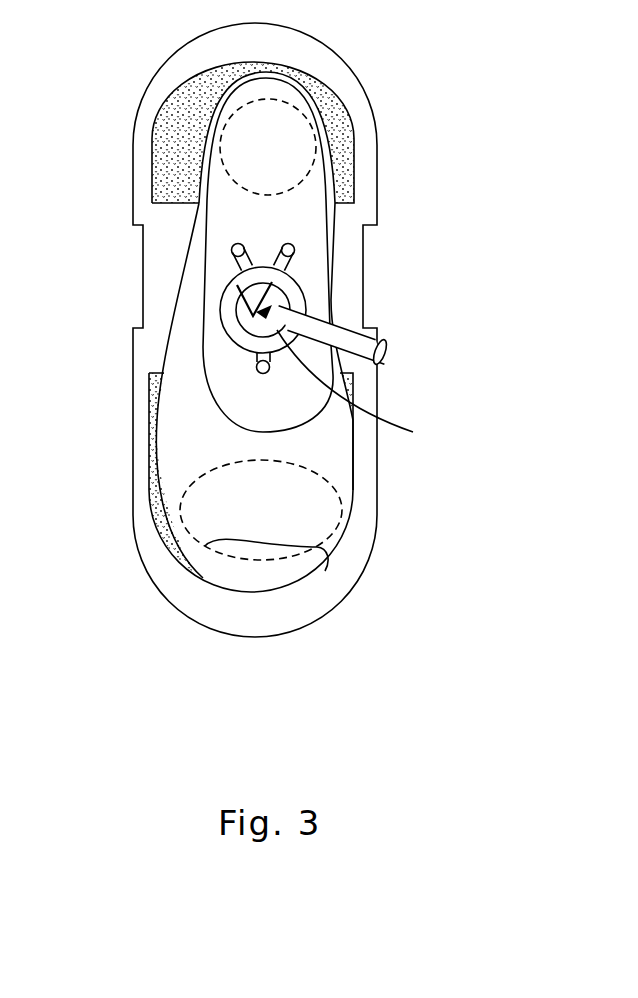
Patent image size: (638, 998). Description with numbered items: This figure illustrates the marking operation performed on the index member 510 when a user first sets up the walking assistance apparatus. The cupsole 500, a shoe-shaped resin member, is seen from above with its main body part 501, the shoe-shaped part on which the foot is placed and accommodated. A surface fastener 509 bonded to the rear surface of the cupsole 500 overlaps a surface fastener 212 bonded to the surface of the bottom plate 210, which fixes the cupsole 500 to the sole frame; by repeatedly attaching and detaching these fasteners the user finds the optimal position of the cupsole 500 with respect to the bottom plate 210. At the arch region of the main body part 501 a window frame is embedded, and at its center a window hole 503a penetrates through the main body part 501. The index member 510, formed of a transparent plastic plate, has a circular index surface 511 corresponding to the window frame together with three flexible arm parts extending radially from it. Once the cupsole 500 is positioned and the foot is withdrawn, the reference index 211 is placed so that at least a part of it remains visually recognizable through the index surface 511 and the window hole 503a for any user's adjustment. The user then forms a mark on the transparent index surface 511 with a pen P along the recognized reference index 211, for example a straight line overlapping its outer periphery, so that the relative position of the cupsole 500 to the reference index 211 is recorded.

The bottom plate 210 is at (162, 65).
The surface fastener 212 is at (340, 123).
The cupsole 500 is at (190, 247).
The main body part 501 is at (303, 237).
The surface fastener 509 is at (213, 163).
The reference index 211 is at (222, 307).
The window hole 503a is at (222, 325).
The index surface 511 is at (295, 298).
The pen P is at (388, 318).
The index member 510 is at (378, 388).